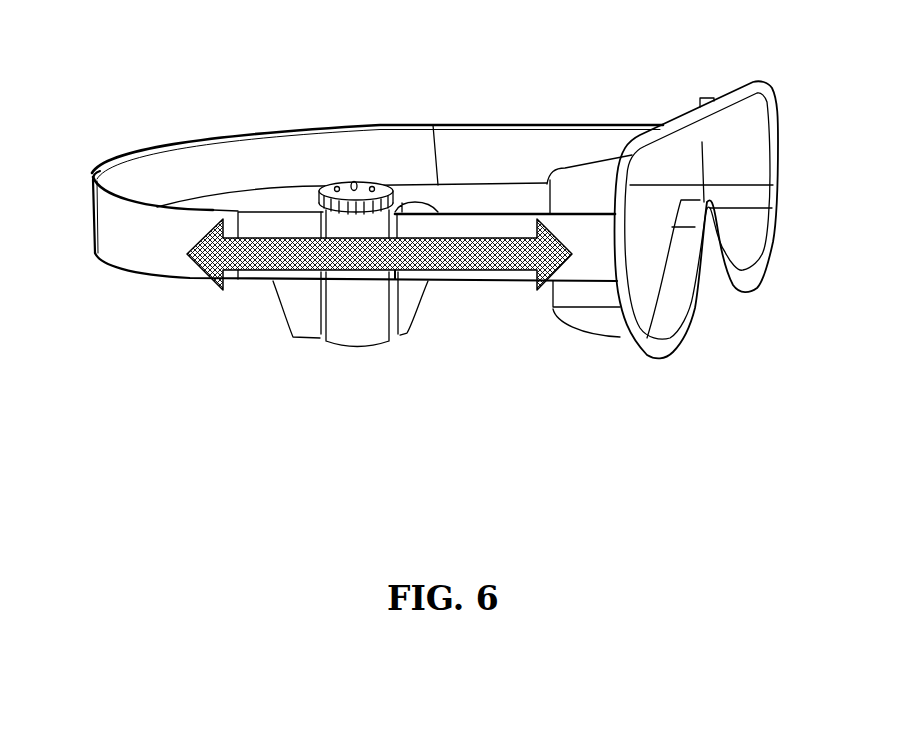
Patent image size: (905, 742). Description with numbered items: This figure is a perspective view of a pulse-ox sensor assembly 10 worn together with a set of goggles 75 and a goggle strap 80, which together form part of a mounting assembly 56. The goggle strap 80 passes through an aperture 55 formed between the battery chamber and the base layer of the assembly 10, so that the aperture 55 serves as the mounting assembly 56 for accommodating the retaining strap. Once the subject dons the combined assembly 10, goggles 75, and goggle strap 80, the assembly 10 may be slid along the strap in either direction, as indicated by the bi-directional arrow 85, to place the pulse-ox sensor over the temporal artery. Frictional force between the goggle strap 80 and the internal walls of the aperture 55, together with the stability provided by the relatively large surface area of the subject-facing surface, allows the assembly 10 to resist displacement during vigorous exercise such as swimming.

The pulse-ox sensor assembly 10 is at (322, 361).
The aperture 55 is at (402, 213).
The mounting assembly 56 is at (404, 228).
The goggles 75 is at (757, 97).
The goggle strap 80 is at (127, 232).
The bi-directional arrow 85 is at (457, 255).